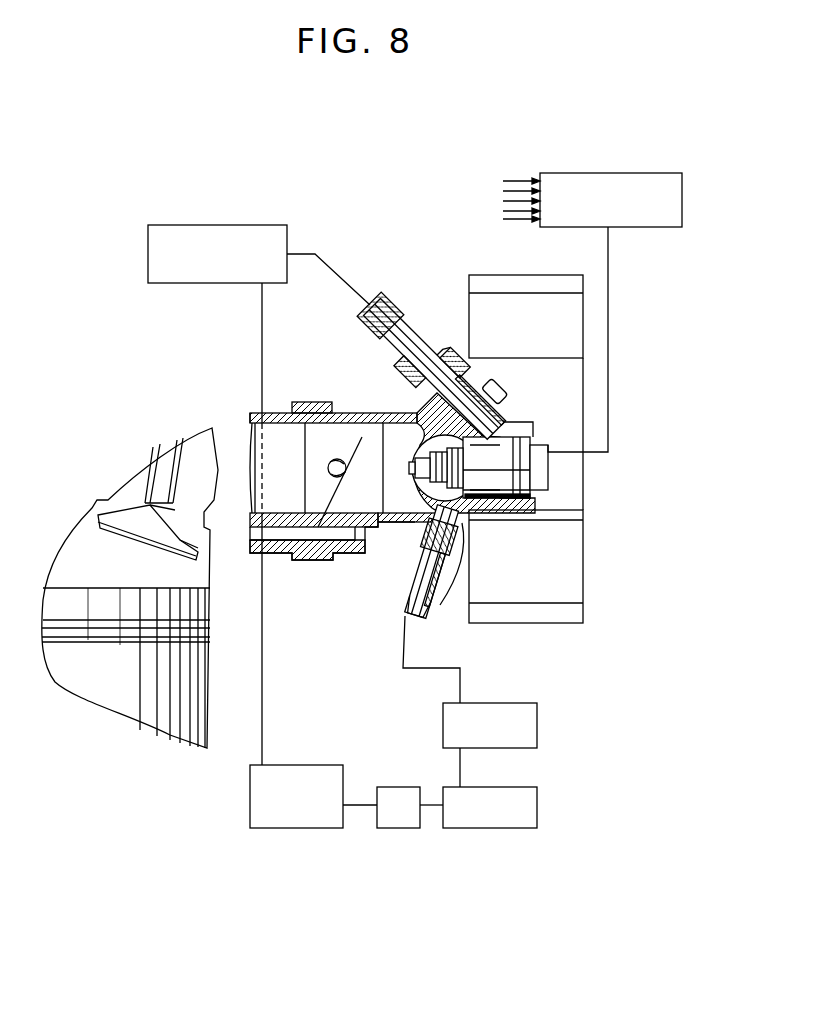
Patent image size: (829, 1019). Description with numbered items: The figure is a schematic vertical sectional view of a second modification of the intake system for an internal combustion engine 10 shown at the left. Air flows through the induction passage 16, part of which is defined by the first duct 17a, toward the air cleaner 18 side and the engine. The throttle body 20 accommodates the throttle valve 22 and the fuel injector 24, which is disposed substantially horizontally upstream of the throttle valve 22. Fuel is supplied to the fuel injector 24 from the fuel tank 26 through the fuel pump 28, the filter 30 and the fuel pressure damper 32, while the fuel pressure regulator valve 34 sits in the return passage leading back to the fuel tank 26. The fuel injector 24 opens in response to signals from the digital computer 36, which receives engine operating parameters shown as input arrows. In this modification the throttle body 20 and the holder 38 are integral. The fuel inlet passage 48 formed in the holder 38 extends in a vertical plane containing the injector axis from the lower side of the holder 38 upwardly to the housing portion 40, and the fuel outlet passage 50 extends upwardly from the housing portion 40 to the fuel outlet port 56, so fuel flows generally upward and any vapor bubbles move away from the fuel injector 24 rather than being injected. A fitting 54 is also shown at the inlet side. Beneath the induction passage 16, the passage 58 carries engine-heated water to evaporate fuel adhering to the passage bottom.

The internal combustion engine 10 is at (108, 495).
The induction passage 16 is at (290, 484).
The first duct 17a is at (281, 410).
The air cleaner 18 is at (533, 275).
The throttle body 20 is at (387, 530).
The throttle valve 22 is at (318, 527).
The fuel injector 24 is at (503, 468).
The fuel tank 26 is at (318, 828).
The fuel pump 28 is at (408, 828).
The filter 30 is at (508, 828).
The fuel pressure damper 32 is at (538, 724).
The fuel pressure regulator valve 34 is at (148, 252).
The digital computer 36 is at (592, 180).
The holder 38 is at (418, 428).
The housing portion 40 is at (535, 497).
The fuel inlet passage 48 is at (458, 540).
The fuel outlet passage 50 is at (442, 357).
The fuel inlet fitting 54 is at (420, 557).
The fuel outlet port 56 is at (422, 315).
The passage for heated water 58 is at (280, 545).